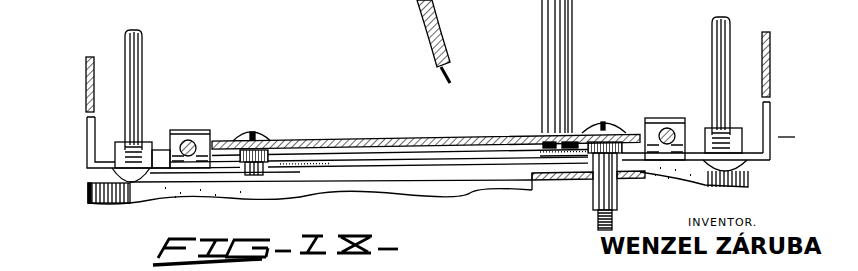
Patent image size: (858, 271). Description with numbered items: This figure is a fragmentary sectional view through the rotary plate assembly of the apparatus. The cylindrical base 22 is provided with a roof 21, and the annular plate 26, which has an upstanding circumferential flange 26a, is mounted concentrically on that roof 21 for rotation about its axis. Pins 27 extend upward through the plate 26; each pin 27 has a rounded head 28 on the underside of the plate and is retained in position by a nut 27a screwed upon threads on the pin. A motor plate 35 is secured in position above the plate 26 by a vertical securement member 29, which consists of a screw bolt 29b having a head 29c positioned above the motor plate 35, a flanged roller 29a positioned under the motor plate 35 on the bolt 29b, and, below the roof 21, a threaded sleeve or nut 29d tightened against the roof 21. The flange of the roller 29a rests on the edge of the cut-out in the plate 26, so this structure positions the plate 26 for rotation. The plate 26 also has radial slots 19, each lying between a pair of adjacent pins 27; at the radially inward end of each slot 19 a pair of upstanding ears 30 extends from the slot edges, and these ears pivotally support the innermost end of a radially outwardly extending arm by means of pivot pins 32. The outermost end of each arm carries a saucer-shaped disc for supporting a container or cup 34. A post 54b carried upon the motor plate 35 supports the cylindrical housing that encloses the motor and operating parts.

The radial slot 19 is at (162, 147).
The roof 21 is at (93, 184).
The cylindrical base 22 is at (453, 190).
The annular plate 26 is at (773, 156).
The upstanding circumferential flange 26a is at (87, 139).
The pin 27 is at (140, 78).
The nut 27a is at (148, 142).
The rounded head 28 is at (110, 202).
The vertical securement member 29 is at (258, 126).
The flanged roller 29a is at (264, 178).
The screw bolt 29b is at (598, 228).
The head 29c is at (263, 132).
The threaded sleeve or nut 29d is at (589, 201).
The upstanding ear 30 is at (203, 132).
The pivot pin 32 is at (188, 140).
The container or cup 34 is at (790, 69).
The motor plate 35 is at (346, 137).
The post 54b is at (603, 20).